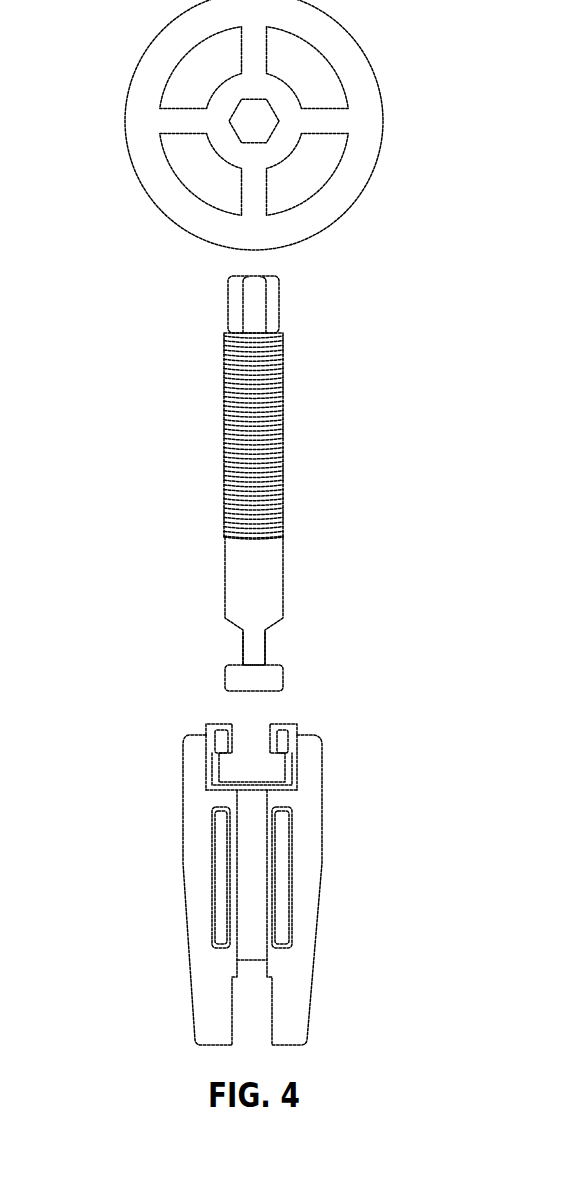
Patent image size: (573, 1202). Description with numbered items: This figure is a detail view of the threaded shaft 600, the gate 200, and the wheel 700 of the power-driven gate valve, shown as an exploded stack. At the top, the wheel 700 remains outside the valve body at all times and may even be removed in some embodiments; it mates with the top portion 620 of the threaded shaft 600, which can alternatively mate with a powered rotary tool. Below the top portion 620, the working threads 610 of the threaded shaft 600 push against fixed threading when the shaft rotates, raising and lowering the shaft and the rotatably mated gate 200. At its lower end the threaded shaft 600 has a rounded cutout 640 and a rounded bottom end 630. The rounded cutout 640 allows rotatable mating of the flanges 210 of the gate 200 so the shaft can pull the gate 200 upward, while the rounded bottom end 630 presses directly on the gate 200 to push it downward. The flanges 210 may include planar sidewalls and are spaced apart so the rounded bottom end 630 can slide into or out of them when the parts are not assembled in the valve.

The wheel 700 is at (357, 161).
The threaded shaft 600 is at (246, 500).
The working threads 610 is at (226, 410).
The top portion 620 is at (276, 292).
The rounded bottom end 630 is at (272, 678).
The rounded cutout 640 is at (251, 653).
The gate 200 is at (253, 855).
The flanges 210 is at (208, 738).